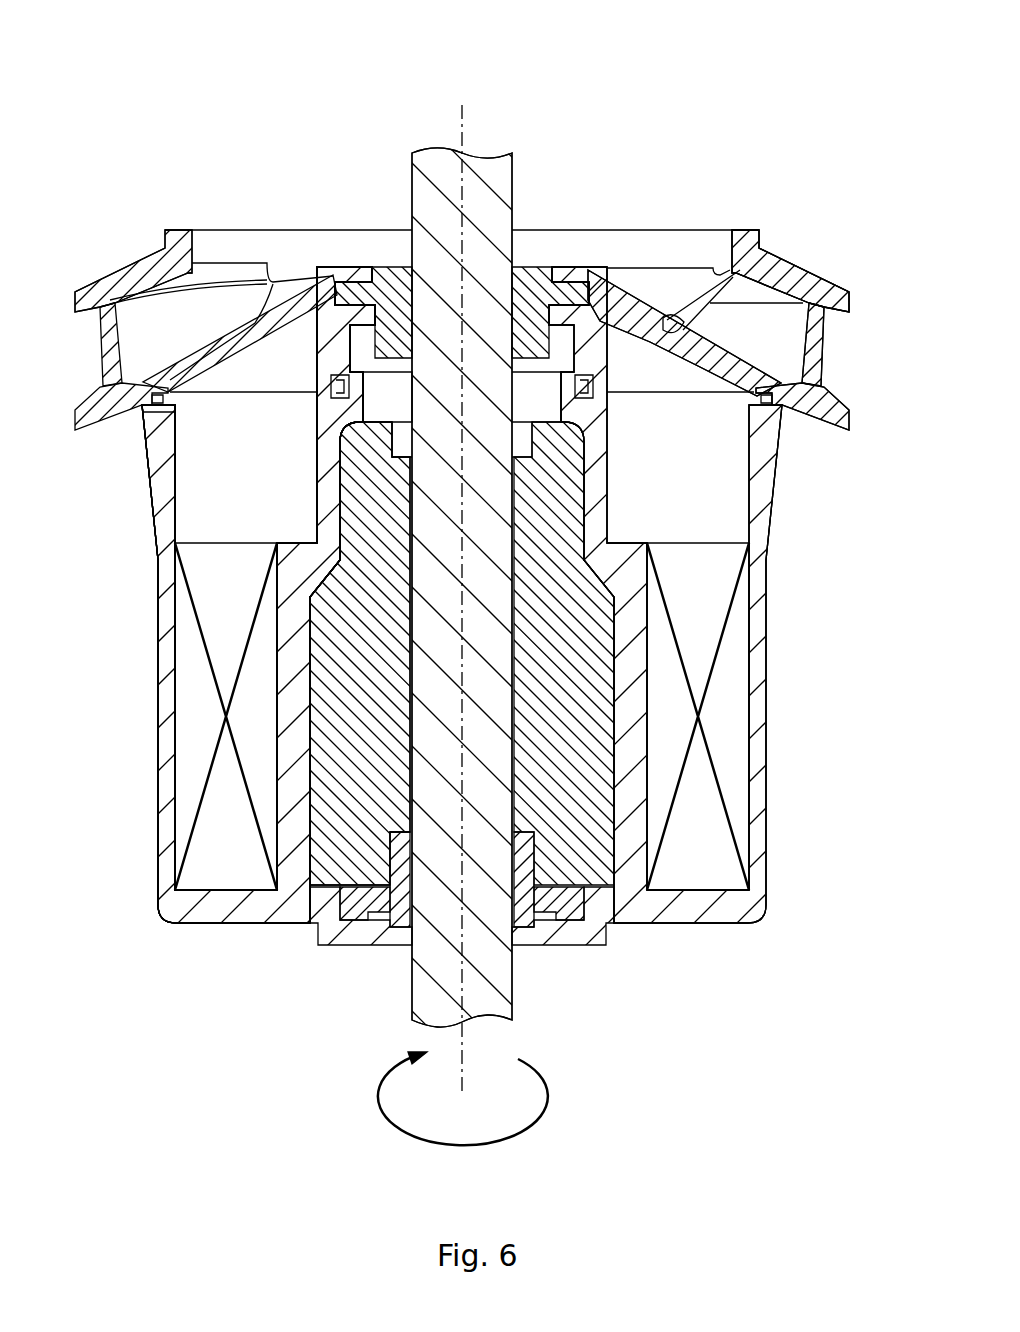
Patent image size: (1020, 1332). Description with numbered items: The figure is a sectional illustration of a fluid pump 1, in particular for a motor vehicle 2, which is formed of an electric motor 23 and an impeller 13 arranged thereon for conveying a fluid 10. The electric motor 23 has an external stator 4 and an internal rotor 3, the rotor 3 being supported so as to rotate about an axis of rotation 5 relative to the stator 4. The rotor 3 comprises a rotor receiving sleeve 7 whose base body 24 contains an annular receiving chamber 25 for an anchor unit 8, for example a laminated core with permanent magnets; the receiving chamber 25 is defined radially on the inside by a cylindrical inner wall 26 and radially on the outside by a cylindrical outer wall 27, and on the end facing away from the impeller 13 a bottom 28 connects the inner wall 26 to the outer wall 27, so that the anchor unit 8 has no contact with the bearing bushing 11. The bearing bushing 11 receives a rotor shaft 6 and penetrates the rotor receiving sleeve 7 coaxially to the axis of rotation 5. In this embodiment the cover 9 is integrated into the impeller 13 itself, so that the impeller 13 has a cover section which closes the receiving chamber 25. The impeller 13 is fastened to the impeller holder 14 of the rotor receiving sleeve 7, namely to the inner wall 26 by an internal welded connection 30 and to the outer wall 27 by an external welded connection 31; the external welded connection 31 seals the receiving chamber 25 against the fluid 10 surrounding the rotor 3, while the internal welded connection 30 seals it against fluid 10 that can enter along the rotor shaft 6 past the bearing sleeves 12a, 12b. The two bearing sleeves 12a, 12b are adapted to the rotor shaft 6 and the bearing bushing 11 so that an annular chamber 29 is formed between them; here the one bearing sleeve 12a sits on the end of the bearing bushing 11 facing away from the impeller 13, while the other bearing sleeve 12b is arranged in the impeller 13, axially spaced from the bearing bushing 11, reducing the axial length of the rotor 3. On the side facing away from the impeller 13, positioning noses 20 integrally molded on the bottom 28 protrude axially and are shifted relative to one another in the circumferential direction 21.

The fluid pump 1 is at (165, 147).
The motor vehicle 2 is at (756, 102).
The electric motor 23 is at (770, 144).
The rotor 3 is at (790, 582).
The stator 4 is at (82, 724).
The axis of rotation 5 is at (492, 108).
The rotor shaft 6 is at (497, 995).
The rotor receiving sleeve 7 is at (768, 638).
The anchor unit 8 is at (720, 697).
The cover 9 is at (698, 358).
The fluid 10 is at (893, 364).
The bearing bushing 11 is at (580, 758).
The bearing sleeve 12a is at (380, 918).
The bearing sleeve 12b is at (537, 272).
The impeller 13 is at (765, 243).
The impeller holder 14 is at (582, 414).
The positioning noses 20 is at (321, 946).
The circumferential direction 21 is at (548, 1094).
The base body 24 is at (760, 837).
The receiving chamber 25 is at (160, 738).
The inner wall 26 is at (290, 605).
The outer wall 27 is at (160, 672).
The bottom 28 is at (240, 906).
The annular chamber 29 is at (407, 787).
The internal welded connection 30 is at (337, 400).
The external welded connection 31 is at (165, 402).